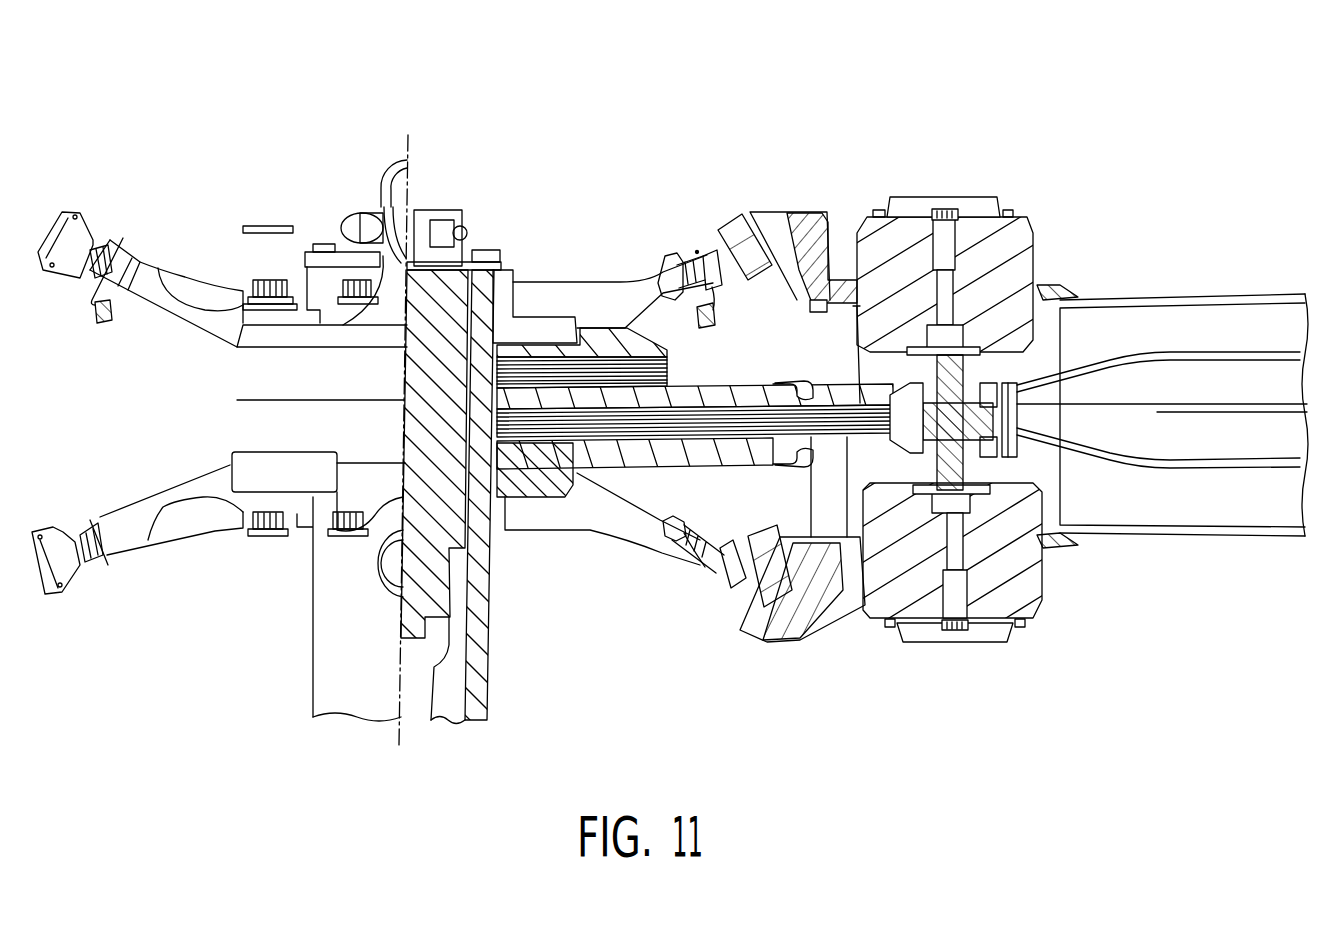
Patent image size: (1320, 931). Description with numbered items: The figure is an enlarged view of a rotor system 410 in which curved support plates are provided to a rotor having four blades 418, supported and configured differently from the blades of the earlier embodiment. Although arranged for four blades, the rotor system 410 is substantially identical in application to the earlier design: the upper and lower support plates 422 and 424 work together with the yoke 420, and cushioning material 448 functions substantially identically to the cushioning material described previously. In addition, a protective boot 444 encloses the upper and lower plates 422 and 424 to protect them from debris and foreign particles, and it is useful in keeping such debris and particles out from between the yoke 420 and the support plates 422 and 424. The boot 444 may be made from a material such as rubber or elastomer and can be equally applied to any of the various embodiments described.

The rotor system 410 is at (234, 126).
The blades 418 is at (1174, 295).
The yoke 420 is at (882, 475).
The upper support plate 422 is at (703, 381).
The lower support plate 424 is at (717, 470).
The protective boot 444 is at (810, 400).
The cushioning material 448 is at (862, 362).